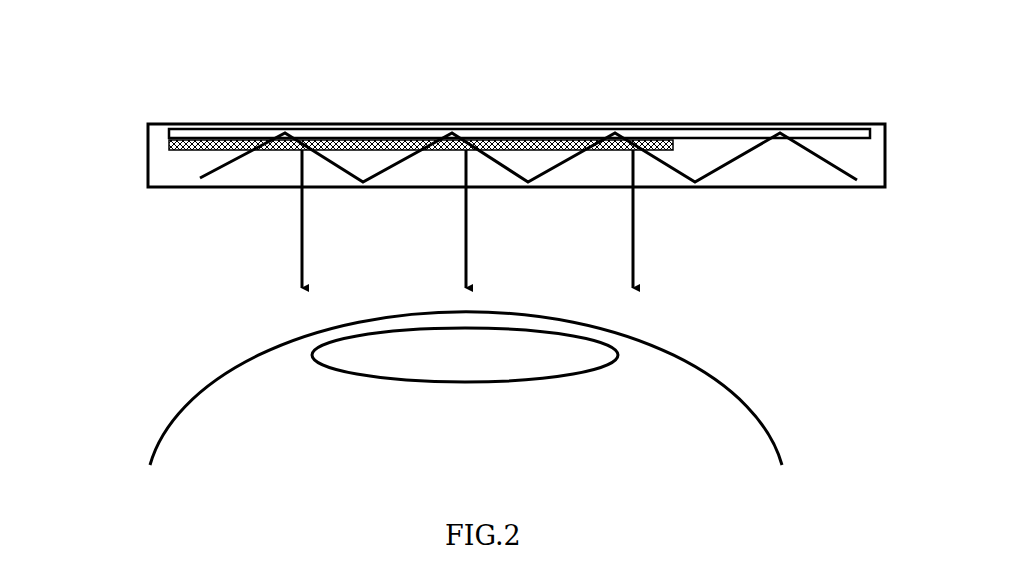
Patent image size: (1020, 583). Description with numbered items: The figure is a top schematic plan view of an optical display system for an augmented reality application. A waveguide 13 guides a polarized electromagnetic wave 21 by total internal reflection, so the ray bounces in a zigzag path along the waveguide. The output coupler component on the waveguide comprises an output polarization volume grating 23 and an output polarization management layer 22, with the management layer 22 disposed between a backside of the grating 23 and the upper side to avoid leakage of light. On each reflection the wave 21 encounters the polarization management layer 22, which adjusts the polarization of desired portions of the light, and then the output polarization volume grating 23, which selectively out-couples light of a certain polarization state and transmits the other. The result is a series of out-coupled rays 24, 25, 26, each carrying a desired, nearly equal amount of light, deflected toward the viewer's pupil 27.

The waveguide 13 is at (148, 156).
The polarized electromagnetic wave 21 is at (828, 157).
The output polarization management layer 22 is at (875, 130).
The output polarization volume grating 23 is at (683, 140).
The ray 24 is at (636, 265).
The ray 25 is at (470, 260).
The ray 26 is at (305, 255).
The viewer's pupil 27 is at (588, 372).